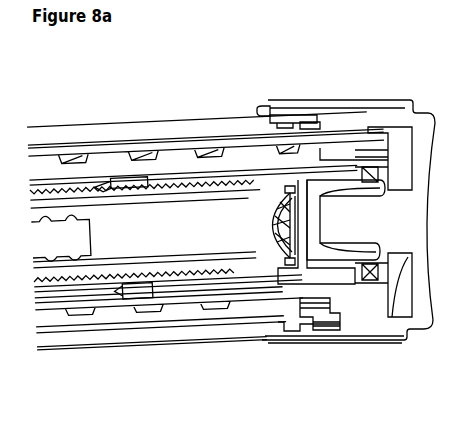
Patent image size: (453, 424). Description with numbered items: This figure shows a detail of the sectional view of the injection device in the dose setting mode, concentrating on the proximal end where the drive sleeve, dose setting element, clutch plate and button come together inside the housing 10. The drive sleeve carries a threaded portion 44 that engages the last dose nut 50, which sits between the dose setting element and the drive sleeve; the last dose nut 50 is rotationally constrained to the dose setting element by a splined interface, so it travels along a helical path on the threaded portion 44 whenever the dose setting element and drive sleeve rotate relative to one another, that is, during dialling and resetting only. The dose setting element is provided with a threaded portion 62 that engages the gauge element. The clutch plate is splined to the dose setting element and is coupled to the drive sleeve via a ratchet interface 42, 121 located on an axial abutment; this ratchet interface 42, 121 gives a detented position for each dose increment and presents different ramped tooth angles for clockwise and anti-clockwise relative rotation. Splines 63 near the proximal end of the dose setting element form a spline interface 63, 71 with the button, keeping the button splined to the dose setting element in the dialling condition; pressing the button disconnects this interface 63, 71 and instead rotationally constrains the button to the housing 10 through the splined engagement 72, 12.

The housing 10 is at (128, 335).
The threaded portion 44 is at (62, 192).
The last dose nut 50 is at (128, 178).
The threaded portion 62 is at (175, 305).
The ratchet interface 42 is at (272, 222).
The ratchet interface 121 is at (282, 196).
The splined engagement 12 is at (287, 332).
The splined engagement 72 is at (327, 332).
The splines 63 is at (372, 277).
The spline interface 71 is at (382, 267).